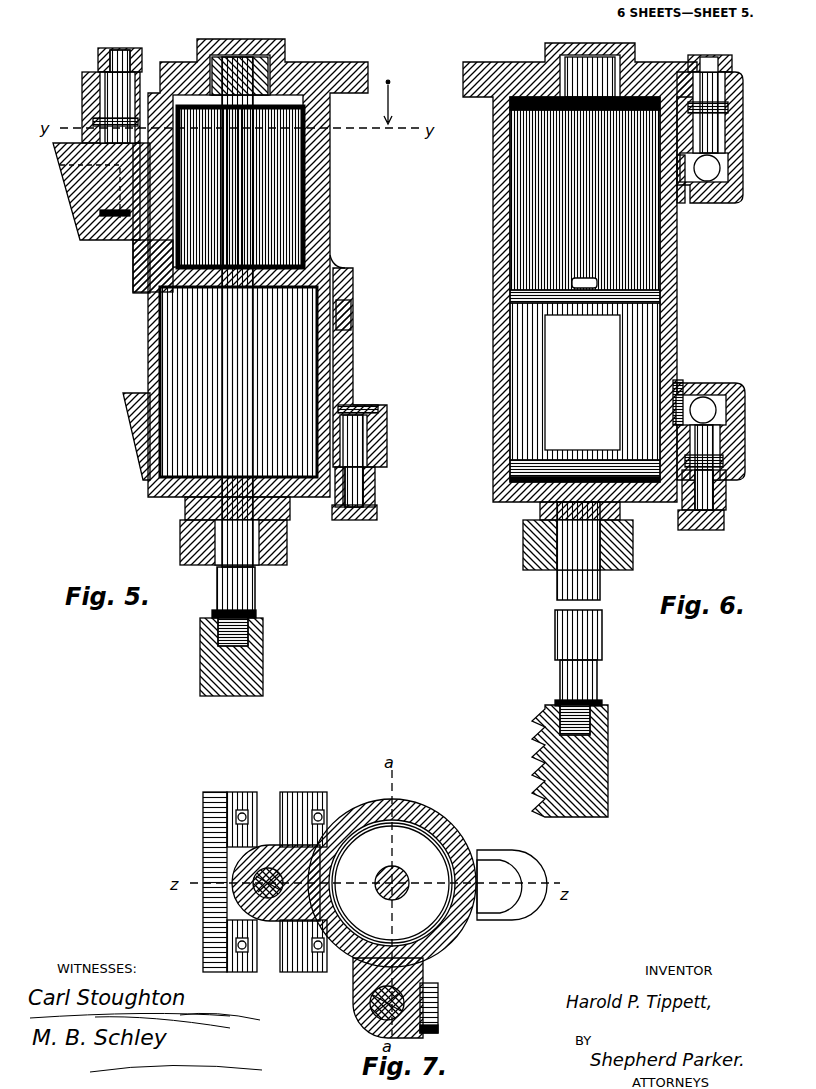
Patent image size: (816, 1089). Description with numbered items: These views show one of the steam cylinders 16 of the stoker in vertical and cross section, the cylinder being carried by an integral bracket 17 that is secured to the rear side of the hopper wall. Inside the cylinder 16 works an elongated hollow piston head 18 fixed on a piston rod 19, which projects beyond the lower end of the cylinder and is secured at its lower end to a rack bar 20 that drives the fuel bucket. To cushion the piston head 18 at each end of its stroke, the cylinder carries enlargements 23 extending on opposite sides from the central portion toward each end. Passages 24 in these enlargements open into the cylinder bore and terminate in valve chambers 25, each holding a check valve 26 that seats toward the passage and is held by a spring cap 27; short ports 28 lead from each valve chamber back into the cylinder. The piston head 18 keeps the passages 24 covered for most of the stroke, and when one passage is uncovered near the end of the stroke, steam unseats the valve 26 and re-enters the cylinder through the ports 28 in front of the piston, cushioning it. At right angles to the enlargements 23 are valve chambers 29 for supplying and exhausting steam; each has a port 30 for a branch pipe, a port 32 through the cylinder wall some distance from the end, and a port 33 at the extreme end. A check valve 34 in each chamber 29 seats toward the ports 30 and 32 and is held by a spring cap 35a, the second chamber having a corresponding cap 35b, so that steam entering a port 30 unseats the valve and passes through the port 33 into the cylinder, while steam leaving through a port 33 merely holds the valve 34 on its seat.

In FIG. 5, the steam cylinder 16 is at (325, 205).
In FIG. 6, the steam cylinder 16 is at (493, 232).
In FIG. 7, the steam cylinder 16 is at (392, 883).
In FIG. 5, the integral bracket 17 is at (75, 185).
In FIG. 7, the integral bracket 17 is at (203, 815).
In FIG. 5, the elongated hollow piston head 18 is at (307, 167).
In FIG. 6, the elongated hollow piston head 18 is at (585, 289).
In FIG. 7, the elongated hollow piston head 18 is at (392, 883).
In FIG. 5, the piston rod 19 is at (233, 340).
In FIG. 6, the piston rod 19 is at (572, 570).
In FIG. 7, the piston rod 19 is at (378, 877).
In FIG. 5, the rack bar 20 is at (207, 660).
In FIG. 6, the rack bar 20 is at (533, 745).
In FIG. 5, the enlargement 23 is at (133, 262).
In FIG. 7, the enlargement 23 is at (490, 885).
In FIG. 5, the passage 24 is at (120, 210).
In FIG. 6, the passage 24 is at (598, 278).
In FIG. 5, the valve chamber 25 is at (98, 120).
In FIG. 7, the valve chamber 25 is at (273, 847).
In FIG. 5, the check valve 26 is at (100, 128).
In FIG. 7, the check valve 26 is at (247, 897).
In FIG. 5, the spring cap 27 is at (100, 52).
In FIG. 5, the short port 28 is at (157, 75).
In FIG. 6, the valve chamber 29 is at (733, 197).
In FIG. 7, the valve chamber 29 is at (437, 983).
In FIG. 6, the port 30 is at (730, 155).
In FIG. 6, the port 32 is at (683, 200).
In FIG. 6, the port 33 is at (680, 100).
In FIG. 6, the check valve 34 is at (712, 125).
In FIG. 7, the check valve 34 is at (373, 1008).
In FIG. 6, the spring cap 35a is at (707, 63).
In FIG. 6, the cap nut 35b is at (723, 522).